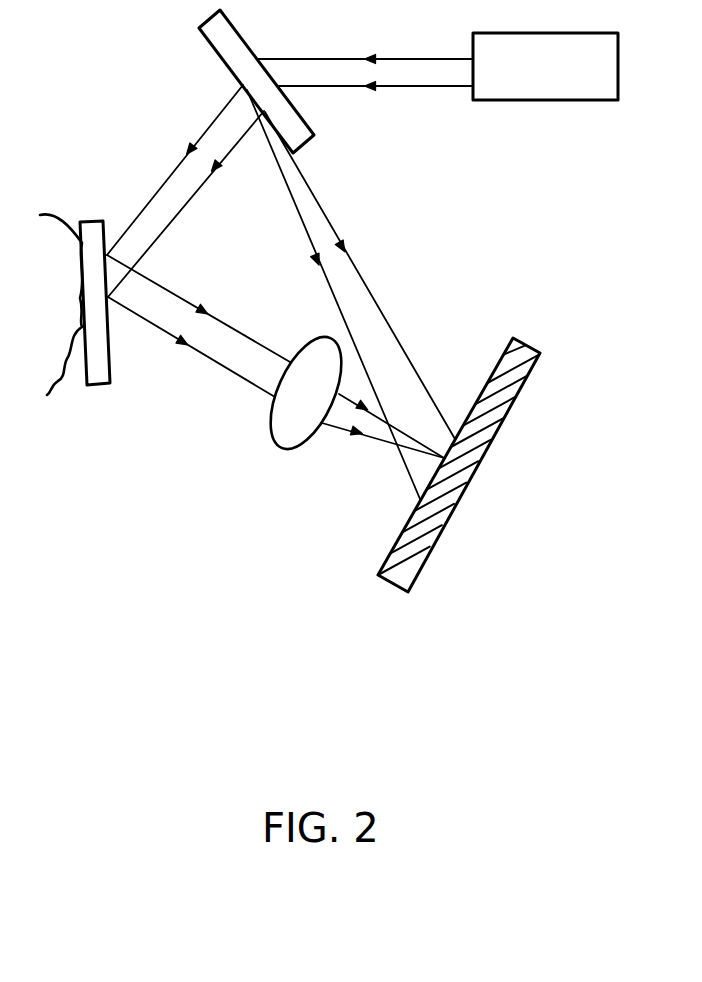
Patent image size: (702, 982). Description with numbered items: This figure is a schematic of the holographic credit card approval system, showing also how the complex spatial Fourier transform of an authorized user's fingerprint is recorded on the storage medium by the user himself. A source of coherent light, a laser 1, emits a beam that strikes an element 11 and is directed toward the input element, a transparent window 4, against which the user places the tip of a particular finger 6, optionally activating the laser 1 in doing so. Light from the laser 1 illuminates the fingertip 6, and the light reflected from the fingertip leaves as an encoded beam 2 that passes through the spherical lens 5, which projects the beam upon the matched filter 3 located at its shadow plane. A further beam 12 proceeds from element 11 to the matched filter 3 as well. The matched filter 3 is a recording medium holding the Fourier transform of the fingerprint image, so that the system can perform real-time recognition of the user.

The laser 1 is at (597, 68).
The encoded beam 2 is at (222, 349).
The matched filter 3 is at (393, 580).
The transparent window 4 is at (98, 373).
The spherical lens 5 is at (287, 430).
The finger 6 is at (48, 304).
The beam splitter 11 is at (297, 133).
The light beam 12 is at (390, 367).